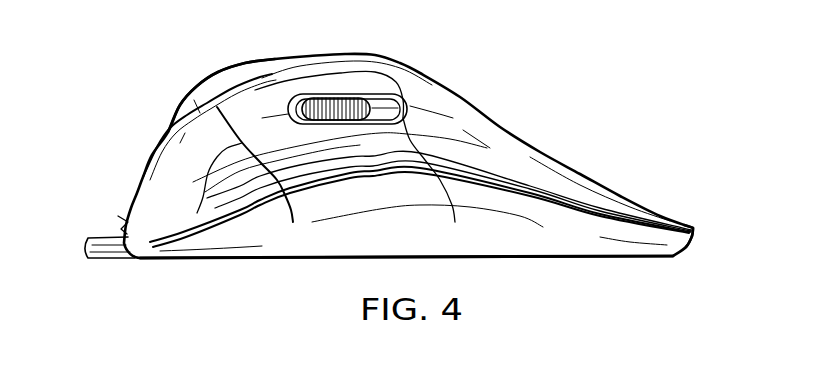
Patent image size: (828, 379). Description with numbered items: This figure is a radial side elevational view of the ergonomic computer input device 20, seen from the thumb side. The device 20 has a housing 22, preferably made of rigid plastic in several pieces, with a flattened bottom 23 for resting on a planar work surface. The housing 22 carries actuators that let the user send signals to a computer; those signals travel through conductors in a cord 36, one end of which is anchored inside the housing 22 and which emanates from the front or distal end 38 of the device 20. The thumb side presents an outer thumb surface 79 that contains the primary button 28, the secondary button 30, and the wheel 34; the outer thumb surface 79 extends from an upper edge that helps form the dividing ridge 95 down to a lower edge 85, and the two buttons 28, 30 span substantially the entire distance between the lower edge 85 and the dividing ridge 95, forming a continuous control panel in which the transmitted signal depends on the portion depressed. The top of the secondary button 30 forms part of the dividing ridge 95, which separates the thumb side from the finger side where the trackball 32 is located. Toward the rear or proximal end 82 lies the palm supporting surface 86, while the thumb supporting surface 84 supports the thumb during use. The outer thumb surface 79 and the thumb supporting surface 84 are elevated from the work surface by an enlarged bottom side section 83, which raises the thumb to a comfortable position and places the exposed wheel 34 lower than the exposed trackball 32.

The ergonomic computer input device 20 is at (585, 109).
The housing 22 is at (443, 103).
The flattened bottom 23 is at (632, 256).
The primary button 28 is at (292, 166).
The secondary button 30 is at (297, 80).
The trackball 32 is at (200, 88).
The wheel 34 is at (334, 116).
The cord 36 is at (100, 240).
The front or distal end 38 is at (126, 225).
The outer thumb surface 79 is at (197, 213).
The rear or proximal end 82 is at (694, 229).
The enlarged bottom side section 83 is at (514, 230).
The thumb supporting surface 84 is at (446, 183).
The lower edge 85 is at (335, 187).
The palm supporting surface 86 is at (634, 203).
The dividing ridge 95 is at (421, 71).